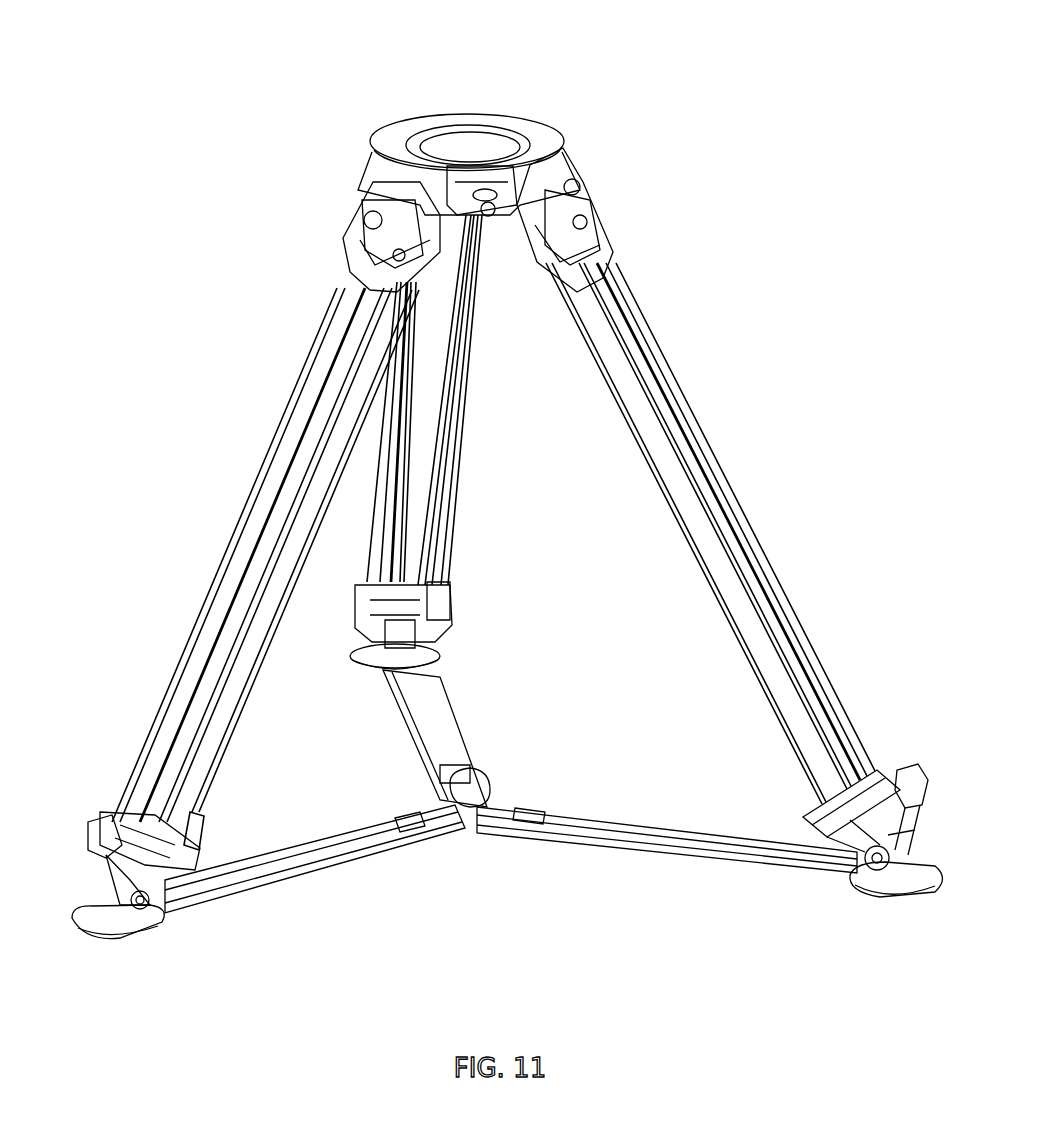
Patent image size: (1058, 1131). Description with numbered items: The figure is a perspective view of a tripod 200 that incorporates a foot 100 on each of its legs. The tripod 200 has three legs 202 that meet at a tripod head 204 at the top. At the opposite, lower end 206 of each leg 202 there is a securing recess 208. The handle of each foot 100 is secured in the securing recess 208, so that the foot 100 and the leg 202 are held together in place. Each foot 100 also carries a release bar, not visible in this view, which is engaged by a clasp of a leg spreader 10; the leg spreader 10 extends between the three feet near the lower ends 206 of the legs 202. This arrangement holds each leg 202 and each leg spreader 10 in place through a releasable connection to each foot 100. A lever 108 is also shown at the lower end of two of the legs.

The tripod 200 is at (245, 345).
The tripod head 204 is at (531, 115).
The leg 202 is at (643, 327).
The lower end 206 is at (452, 602).
The leg spreader 10 is at (433, 717).
The foot 100 is at (355, 662).
The lever 108 is at (95, 822).
The securing recess 208 is at (107, 880).